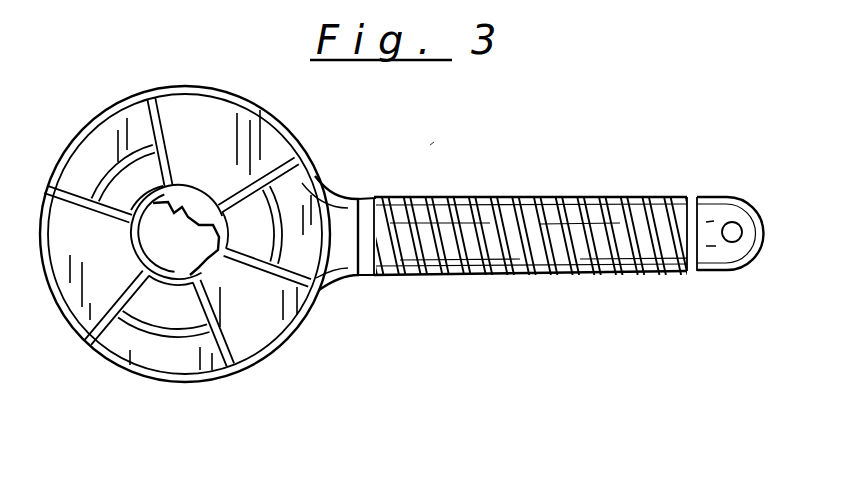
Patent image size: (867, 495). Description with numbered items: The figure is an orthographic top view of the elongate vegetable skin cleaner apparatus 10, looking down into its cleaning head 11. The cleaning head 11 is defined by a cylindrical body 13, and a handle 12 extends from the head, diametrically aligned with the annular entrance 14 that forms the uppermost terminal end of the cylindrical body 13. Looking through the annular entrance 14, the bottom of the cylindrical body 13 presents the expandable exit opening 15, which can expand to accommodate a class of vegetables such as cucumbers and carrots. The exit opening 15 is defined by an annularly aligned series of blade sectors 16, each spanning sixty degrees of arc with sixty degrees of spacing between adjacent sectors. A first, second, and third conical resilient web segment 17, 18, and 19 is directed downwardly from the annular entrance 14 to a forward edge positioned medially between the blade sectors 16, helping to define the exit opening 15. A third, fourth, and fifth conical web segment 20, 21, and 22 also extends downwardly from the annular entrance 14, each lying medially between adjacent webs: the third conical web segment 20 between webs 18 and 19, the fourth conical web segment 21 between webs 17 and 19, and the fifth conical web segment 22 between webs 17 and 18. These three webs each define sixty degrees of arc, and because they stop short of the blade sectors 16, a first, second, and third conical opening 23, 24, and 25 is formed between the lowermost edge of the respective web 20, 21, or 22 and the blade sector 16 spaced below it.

The elongate vegetable skin cleaner apparatus 10 is at (446, 138).
The cleaning head 11 is at (303, 104).
The handle 12 is at (605, 190).
The cylindrical body 13 is at (148, 362).
The annular entrance 14 is at (298, 337).
The bottom expandable exit opening 15 is at (191, 262).
The blade sectors 16 is at (187, 236).
The first conical resilient web segment 17 is at (206, 117).
The second conical resilient web segment 18 is at (256, 327).
The third conical resilient web segment 19 is at (103, 283).
The third conical web segment 20 is at (177, 360).
The fourth conical web segment 21 is at (94, 168).
The fifth conical web segment 22 is at (305, 196).
The first conical opening 23 is at (189, 327).
The second conical opening 24 is at (148, 208).
The third conical opening 25 is at (272, 251).